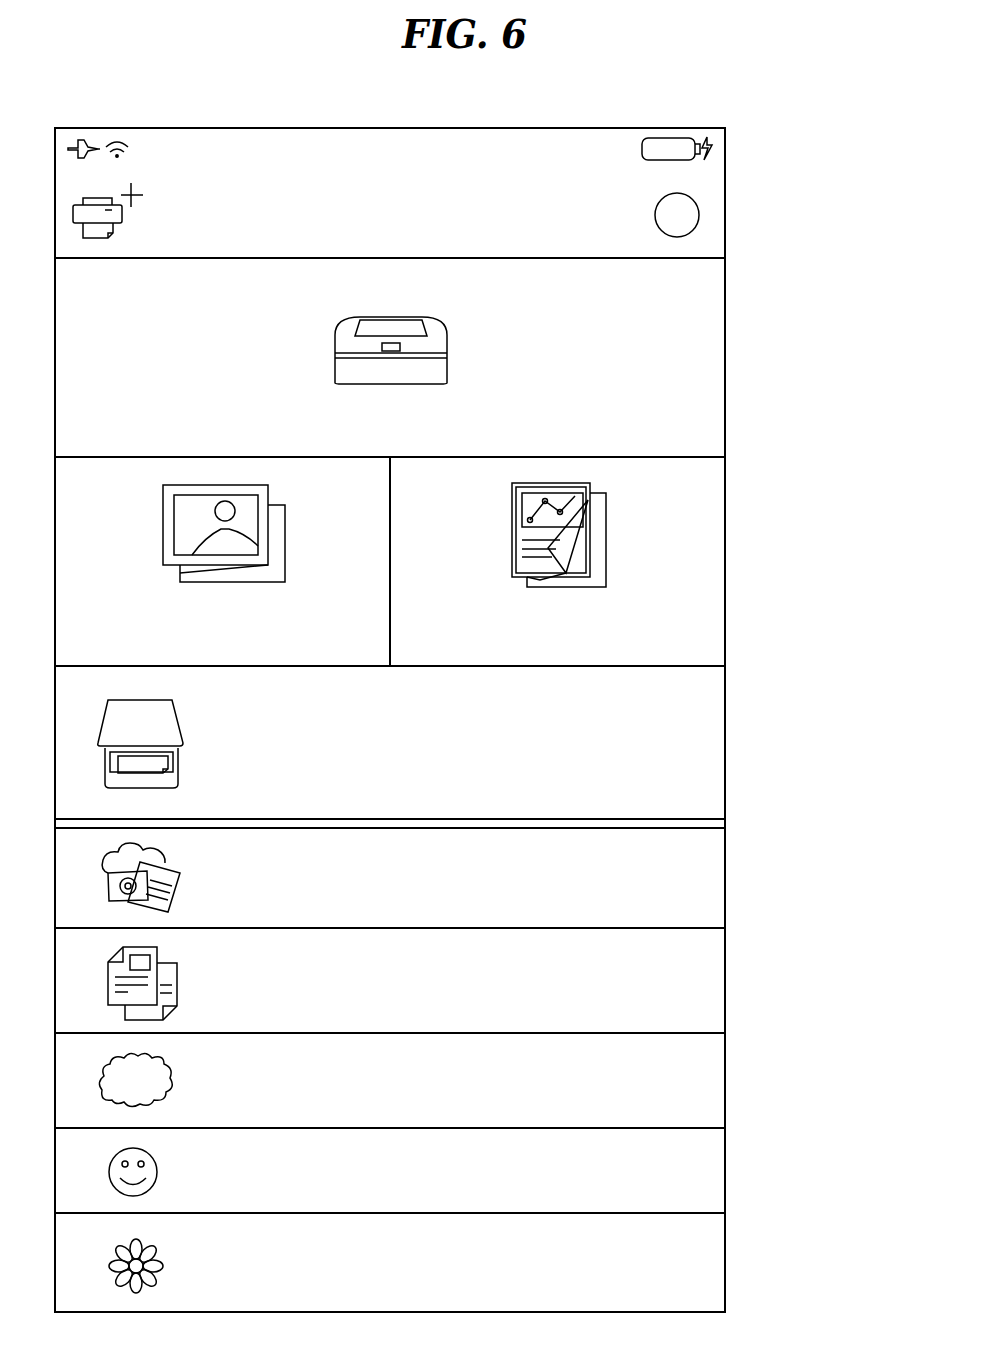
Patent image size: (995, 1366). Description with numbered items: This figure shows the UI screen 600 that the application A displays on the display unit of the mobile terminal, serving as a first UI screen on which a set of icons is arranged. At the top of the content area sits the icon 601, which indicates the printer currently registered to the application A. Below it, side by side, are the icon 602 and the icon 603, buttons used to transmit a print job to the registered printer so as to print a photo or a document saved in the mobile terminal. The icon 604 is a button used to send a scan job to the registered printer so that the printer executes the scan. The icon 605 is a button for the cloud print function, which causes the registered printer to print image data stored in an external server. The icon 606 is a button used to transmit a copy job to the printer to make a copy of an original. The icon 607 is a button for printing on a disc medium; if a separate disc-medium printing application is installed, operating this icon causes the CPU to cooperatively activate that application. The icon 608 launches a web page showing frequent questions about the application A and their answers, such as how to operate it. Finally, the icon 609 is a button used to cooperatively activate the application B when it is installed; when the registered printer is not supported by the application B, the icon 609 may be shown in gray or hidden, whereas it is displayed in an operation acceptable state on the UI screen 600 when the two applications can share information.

The UI screen 600 is at (768, 188).
The icon 601 is at (455, 357).
The icon 602 is at (292, 548).
The icon 603 is at (613, 550).
The icon 604 is at (270, 738).
The icon 605 is at (278, 878).
The icon 606 is at (275, 982).
The icon 607 is at (488, 1075).
The icon 608 is at (388, 1170).
The icon 609 is at (472, 1260).